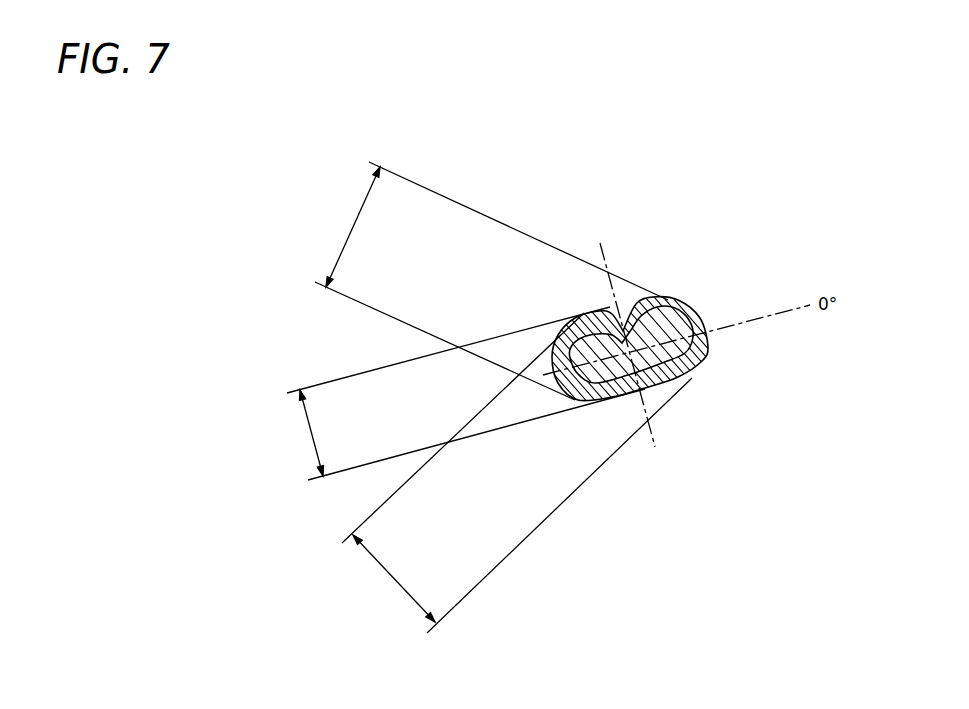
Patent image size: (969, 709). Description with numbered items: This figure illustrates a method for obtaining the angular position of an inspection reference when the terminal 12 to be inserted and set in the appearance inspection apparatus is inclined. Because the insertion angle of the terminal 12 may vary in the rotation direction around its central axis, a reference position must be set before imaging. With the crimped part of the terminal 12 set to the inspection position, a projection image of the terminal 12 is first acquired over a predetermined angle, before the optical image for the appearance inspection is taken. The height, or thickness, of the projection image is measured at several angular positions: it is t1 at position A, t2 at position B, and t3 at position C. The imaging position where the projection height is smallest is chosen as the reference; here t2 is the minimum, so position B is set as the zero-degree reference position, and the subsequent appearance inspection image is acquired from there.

The terminal 12 is at (684, 288).
The position A is at (491, 281).
The position B is at (453, 393).
The position c C is at (517, 473).
The height of the projection image at position A t1 is at (353, 227).
The height of the projection image at position B t2 is at (318, 433).
The height of the projection image at position c t3 is at (394, 578).